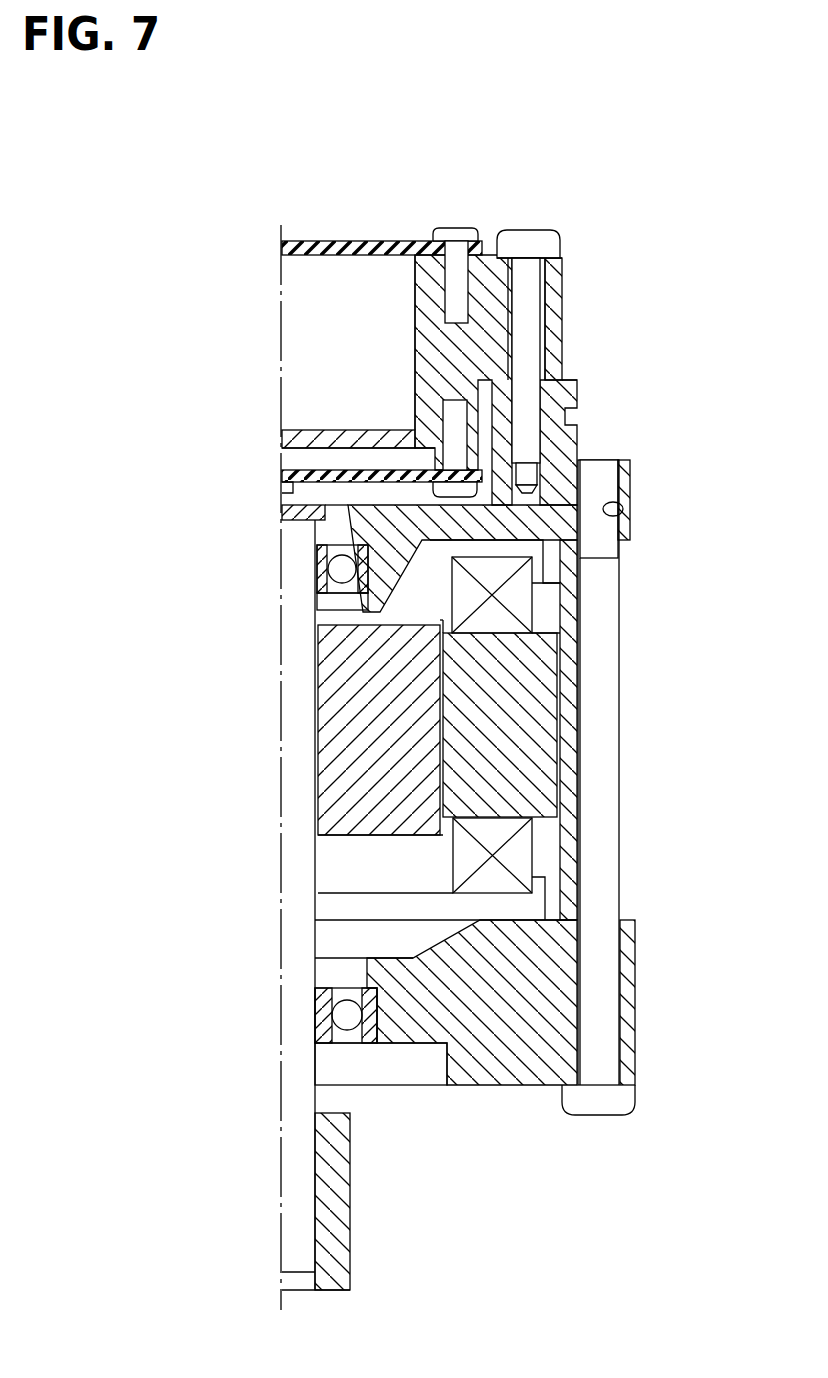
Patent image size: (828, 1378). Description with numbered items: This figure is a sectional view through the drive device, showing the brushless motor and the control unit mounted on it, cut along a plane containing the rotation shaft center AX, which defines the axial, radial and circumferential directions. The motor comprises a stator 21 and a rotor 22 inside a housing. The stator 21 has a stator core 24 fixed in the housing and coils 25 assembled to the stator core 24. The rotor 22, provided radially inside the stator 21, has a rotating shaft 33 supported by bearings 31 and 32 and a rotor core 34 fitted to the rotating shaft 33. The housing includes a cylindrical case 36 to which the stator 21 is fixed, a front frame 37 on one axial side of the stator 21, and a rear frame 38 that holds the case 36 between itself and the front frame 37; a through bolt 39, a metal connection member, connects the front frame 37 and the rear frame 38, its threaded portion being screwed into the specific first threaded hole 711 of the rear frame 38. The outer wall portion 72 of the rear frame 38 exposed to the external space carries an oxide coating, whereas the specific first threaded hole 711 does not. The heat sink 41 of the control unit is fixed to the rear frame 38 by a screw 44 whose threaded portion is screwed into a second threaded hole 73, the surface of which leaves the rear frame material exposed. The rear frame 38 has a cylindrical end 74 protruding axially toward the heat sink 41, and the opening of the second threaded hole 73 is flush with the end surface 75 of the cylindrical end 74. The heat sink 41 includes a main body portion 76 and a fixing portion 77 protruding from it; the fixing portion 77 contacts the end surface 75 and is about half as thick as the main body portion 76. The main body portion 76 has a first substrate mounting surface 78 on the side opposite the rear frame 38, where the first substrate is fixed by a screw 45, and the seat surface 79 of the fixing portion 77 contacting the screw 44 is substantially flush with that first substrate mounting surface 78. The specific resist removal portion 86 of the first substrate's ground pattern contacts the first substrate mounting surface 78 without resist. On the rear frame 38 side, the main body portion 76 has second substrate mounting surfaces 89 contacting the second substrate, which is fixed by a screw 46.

The rotation shaft center AX is at (281, 1190).
The first substrate mounting surface 78 is at (427, 243).
The screw 45 is at (455, 228).
The screw 44 is at (568, 327).
The seat surface 79 is at (552, 240).
The specific resist removal portion 86 is at (500, 280).
The fixing portion 77 is at (555, 302).
The main body portion 76 is at (430, 347).
The heat sink 41 is at (550, 380).
The end surface 75 is at (563, 360).
The second threaded hole 73 is at (530, 408).
The cylindrical end 74 is at (566, 435).
The rear frame 38 is at (523, 512).
The outer wall portion 72 is at (632, 490).
The specific first threaded hole 711 is at (612, 515).
The screw 46 is at (600, 560).
The through bolt 39 is at (605, 617).
The second substrate mounting surface 89 is at (433, 508).
The bearing 32 is at (340, 570).
The rotating shaft 33 is at (303, 693).
The rotor core 34 is at (407, 732).
The rotor 22 is at (510, 730).
The coil 25 is at (540, 775).
The stator core 24 is at (520, 857).
The stator 21 is at (581, 725).
The case 36 is at (568, 877).
The bearing 31 is at (348, 1015).
The front frame 37 is at (494, 1072).